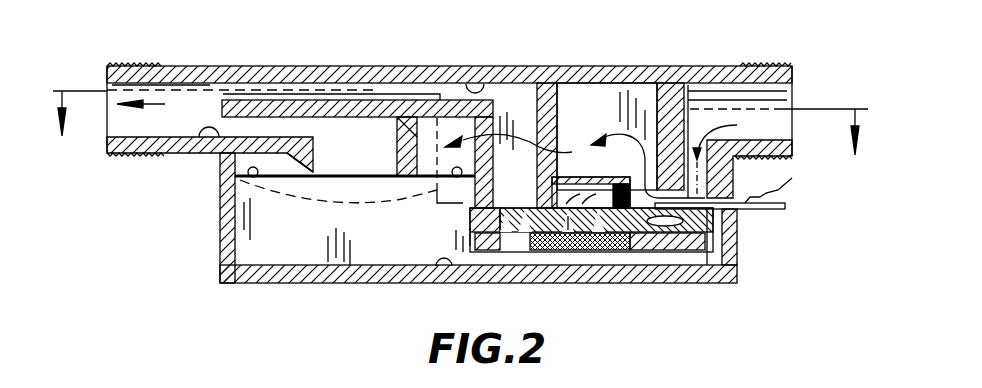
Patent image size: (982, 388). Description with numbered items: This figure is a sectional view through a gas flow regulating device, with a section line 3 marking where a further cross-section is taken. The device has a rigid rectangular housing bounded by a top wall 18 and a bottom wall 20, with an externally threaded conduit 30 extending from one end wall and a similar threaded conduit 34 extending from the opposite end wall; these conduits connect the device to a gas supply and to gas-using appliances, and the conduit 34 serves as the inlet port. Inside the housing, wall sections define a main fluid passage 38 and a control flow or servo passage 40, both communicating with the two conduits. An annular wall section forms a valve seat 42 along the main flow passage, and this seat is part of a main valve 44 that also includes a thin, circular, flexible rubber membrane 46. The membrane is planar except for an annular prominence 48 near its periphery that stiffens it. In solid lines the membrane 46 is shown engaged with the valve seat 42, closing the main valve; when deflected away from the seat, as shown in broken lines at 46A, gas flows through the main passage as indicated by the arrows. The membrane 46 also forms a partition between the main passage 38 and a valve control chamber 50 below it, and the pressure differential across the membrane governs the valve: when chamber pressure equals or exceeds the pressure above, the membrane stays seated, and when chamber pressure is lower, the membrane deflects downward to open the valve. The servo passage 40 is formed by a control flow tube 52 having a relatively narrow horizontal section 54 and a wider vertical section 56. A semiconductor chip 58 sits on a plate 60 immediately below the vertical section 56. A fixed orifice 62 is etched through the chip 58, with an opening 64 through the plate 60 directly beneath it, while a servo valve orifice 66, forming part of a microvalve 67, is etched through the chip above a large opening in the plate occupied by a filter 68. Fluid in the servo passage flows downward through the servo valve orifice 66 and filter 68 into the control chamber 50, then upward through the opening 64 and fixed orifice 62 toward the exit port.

The section line 3- 3 is at (458, 104).
The top wall 18 is at (325, 72).
The bottom wall 20 is at (292, 273).
The conduit 30 is at (184, 72).
The conduit 34 is at (760, 68).
The main fluid passage 38 is at (206, 140).
The servo passage 40 is at (478, 87).
The valve seat 42 is at (314, 157).
The main valve 44 is at (397, 165).
The membrane 46 is at (320, 178).
The deflected membrane position 46A is at (338, 211).
The annular prominence 48 is at (247, 173).
The valve control chamber 50 is at (437, 270).
The control flow tube 52 is at (266, 103).
The horizontal section 54 is at (357, 103).
The vertical section 56 is at (557, 104).
The semiconductor chip 58 is at (733, 228).
The plate 60 is at (672, 250).
The fixed orifice 62 is at (504, 207).
The opening 64 is at (503, 250).
The servo valve orifice 66 is at (567, 250).
The microvalve 67 is at (587, 228).
The filter 68 is at (611, 250).